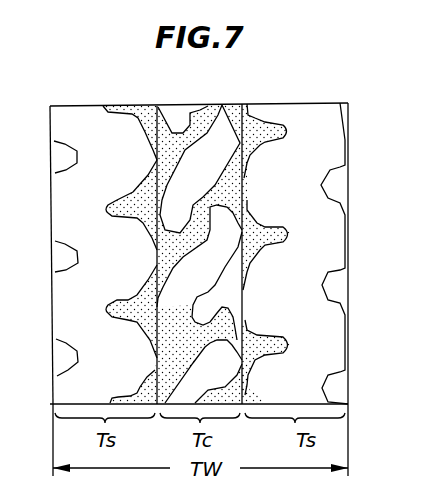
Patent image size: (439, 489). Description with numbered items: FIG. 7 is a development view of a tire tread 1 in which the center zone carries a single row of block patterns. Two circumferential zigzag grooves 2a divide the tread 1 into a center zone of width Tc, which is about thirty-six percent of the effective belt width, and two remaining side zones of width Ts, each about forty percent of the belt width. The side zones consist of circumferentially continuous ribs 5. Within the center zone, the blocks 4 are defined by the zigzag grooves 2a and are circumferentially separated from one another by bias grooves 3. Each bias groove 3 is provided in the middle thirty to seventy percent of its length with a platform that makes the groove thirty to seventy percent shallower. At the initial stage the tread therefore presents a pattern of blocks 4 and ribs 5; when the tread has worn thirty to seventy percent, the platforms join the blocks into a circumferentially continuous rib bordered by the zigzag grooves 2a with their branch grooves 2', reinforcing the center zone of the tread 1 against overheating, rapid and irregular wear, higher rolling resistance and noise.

The tread 1 is at (324, 149).
The circumferential zigzag grooves 2a is at (150, 107).
The branch grooves 2' is at (198, 271).
The bias grooves 3 is at (217, 105).
The blocks 4 is at (200, 194).
The ribs 5 is at (115, 270).